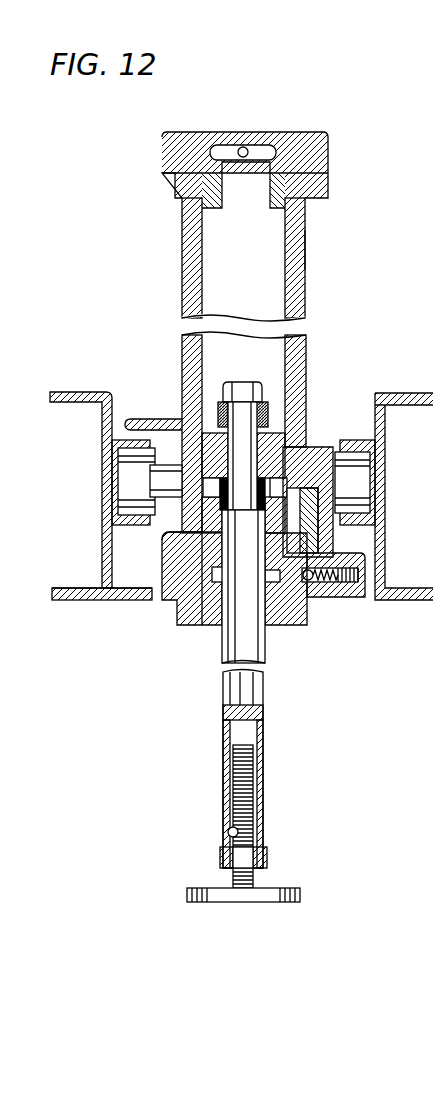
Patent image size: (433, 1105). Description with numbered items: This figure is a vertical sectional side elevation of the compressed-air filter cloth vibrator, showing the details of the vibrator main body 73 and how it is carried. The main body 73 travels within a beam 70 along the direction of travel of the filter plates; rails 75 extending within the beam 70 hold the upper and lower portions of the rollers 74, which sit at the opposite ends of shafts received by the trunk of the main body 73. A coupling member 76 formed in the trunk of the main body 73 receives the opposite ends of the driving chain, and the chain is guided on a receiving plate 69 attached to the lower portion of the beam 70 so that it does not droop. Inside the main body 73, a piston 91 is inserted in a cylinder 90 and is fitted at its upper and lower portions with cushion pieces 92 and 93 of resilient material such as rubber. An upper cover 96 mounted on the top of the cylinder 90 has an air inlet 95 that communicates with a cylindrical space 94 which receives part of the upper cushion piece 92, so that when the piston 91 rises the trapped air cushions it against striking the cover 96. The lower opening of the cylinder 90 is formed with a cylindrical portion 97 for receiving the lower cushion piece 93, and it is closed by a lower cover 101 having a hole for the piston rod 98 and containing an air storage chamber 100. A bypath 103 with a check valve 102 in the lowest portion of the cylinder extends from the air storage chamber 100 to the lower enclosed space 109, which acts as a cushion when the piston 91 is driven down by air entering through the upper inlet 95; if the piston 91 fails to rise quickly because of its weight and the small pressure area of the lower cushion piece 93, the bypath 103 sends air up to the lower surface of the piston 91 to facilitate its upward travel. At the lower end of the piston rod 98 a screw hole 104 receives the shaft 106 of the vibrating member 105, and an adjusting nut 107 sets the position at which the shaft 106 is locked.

The receiving plate 69 is at (92, 601).
The beam 70 is at (100, 436).
The main body of the vibrator 73 is at (321, 258).
The rollers 74 is at (130, 487).
The rails 75 is at (133, 523).
The coupling member 76 is at (138, 418).
The cylinder 90 is at (308, 303).
The piston 91 is at (212, 420).
The upper cushion piece 92 is at (268, 402).
The lower cushion piece 93 is at (282, 478).
The cylindrical space 94 is at (250, 202).
The air inlet 95 is at (241, 148).
The upper cover 96 is at (287, 140).
The cylindrical portion 97 is at (162, 551).
The piston rod 98 is at (248, 688).
The air storage chamber 100 is at (183, 601).
The lower cover 101 is at (282, 600).
The check valve 102 is at (313, 584).
The bypath 103 is at (318, 540).
The screw hole 104 is at (228, 833).
The vibrating member 105 is at (300, 894).
The shaft of the vibrating member 106 is at (255, 789).
The adjusting nut 107 is at (268, 857).
The lower enclosed space 109 is at (280, 487).